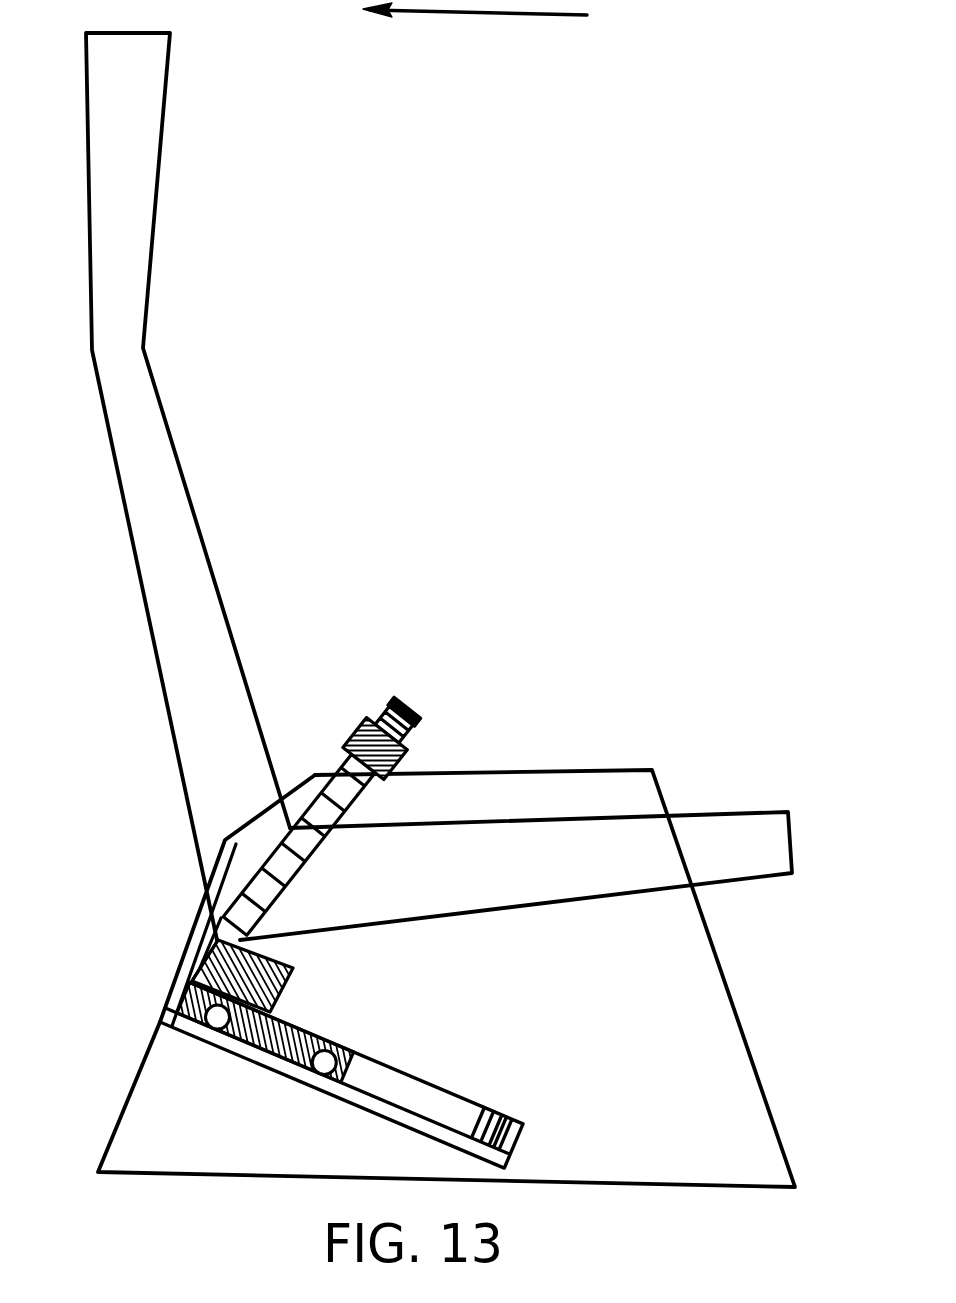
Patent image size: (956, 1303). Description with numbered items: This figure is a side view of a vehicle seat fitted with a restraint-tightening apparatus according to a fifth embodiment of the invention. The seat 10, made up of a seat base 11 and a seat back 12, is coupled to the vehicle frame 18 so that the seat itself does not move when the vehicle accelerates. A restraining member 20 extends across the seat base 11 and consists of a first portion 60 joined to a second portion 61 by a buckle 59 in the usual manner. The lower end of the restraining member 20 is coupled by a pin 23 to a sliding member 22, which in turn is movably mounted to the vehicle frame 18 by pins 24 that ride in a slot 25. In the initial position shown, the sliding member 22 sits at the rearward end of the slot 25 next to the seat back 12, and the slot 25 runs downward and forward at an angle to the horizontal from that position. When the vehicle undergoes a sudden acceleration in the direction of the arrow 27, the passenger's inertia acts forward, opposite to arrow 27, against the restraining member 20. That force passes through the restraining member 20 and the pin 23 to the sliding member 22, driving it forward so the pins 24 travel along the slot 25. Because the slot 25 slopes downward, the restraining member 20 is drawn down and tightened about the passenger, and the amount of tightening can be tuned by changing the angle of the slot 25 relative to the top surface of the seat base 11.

The seat 10 is at (452, 468).
The seat base 11 is at (796, 793).
The seat back 12 is at (145, 437).
The vehicle frame 18 is at (155, 1092).
The restraining member 20 is at (342, 772).
The sliding member 22 is at (289, 976).
The pin 23 is at (217, 940).
The pins 24 is at (180, 1006).
The slot 25 is at (447, 1112).
The arrow 27 is at (485, 16).
The buckle 59 is at (408, 756).
The first portion 60 is at (323, 780).
The second portion 61 is at (406, 707).